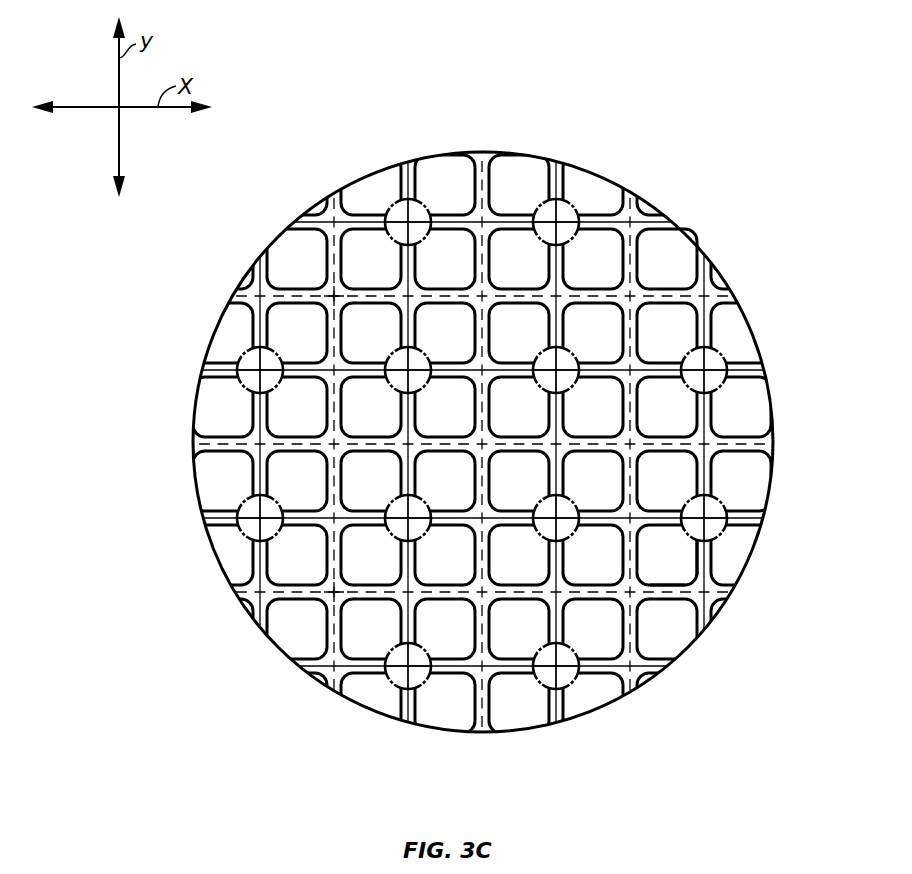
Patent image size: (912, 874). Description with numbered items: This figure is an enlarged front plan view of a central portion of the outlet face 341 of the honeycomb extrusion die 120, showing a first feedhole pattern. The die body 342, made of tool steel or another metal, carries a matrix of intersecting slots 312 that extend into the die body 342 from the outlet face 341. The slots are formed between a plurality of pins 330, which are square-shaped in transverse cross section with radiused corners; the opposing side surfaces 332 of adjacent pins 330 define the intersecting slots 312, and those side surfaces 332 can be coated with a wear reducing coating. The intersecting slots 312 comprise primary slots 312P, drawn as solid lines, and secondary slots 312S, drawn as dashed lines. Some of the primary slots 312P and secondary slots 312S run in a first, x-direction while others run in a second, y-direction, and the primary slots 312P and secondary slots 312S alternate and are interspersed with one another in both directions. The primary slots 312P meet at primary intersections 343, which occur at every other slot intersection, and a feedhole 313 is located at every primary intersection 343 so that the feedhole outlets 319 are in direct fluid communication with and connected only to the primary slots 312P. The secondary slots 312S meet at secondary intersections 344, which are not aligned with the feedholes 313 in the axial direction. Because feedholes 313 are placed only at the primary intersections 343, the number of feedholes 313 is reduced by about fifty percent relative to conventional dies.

The honeycomb extrusion die 120 is at (660, 157).
The intersecting slots 312 is at (752, 438).
The primary slots 312P is at (707, 327).
The secondary slots 312S is at (652, 201).
The feedholes 313 is at (381, 197).
The feedhole outlets 319 is at (424, 206).
The pins 330 is at (352, 272).
The side surfaces 332 is at (698, 565).
The outlet face 341 is at (672, 253).
The die body 342 is at (730, 616).
The primary intersections 343 is at (248, 353).
The secondary intersections 344 is at (332, 296).